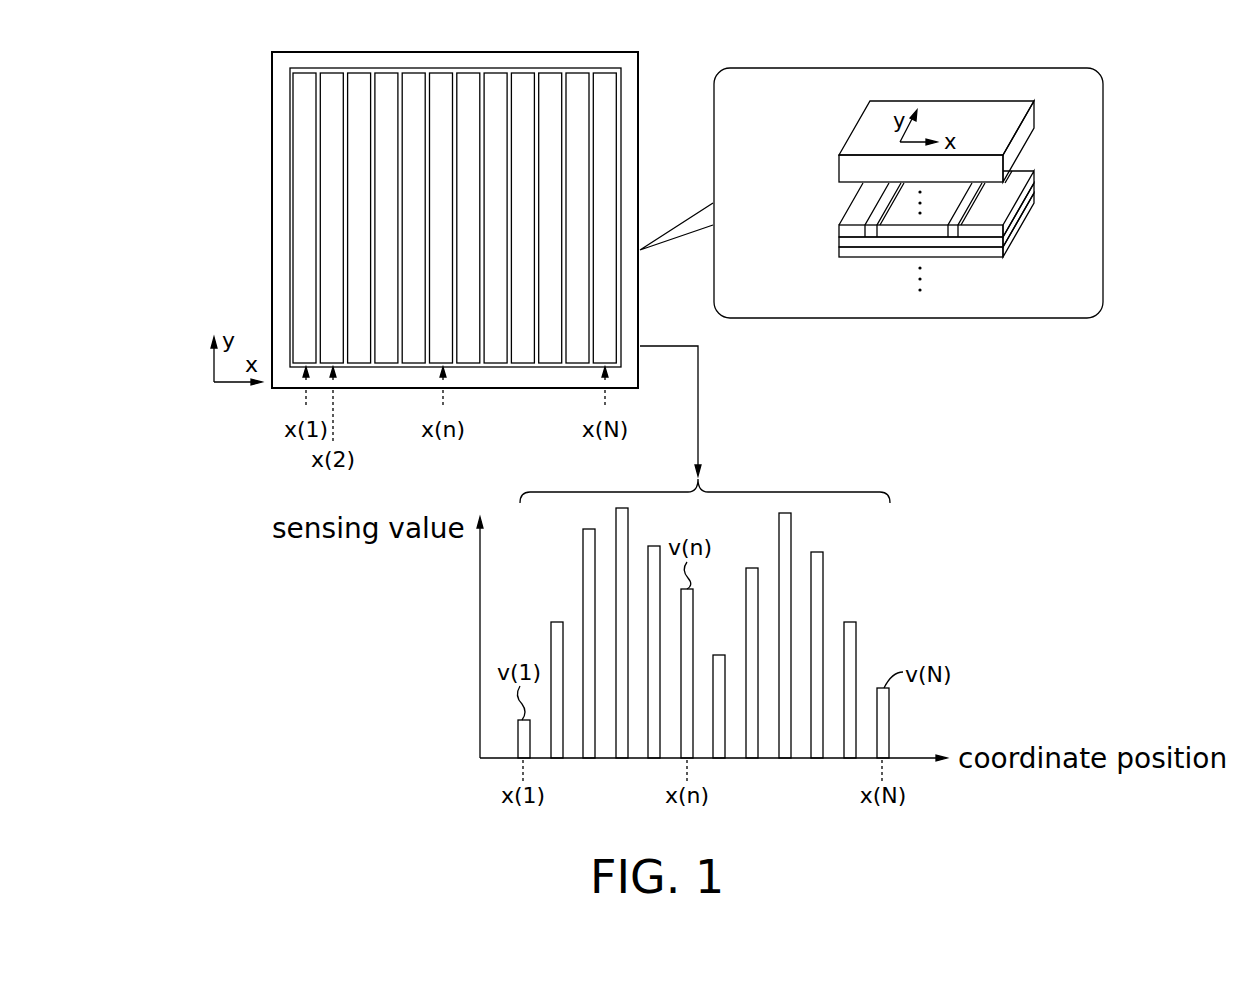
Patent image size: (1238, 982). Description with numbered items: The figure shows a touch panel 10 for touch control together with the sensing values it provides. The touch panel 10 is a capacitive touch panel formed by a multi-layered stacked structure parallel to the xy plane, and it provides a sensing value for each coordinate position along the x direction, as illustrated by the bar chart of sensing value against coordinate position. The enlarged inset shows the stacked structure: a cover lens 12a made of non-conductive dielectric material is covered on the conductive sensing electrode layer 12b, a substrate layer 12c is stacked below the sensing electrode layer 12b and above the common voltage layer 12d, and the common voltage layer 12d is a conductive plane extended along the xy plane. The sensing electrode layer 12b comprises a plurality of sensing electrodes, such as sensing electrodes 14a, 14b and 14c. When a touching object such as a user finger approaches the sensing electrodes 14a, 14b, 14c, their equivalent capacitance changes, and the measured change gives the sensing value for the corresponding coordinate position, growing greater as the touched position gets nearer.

The touch panel 10 is at (630, 94).
The cover lens 12a is at (832, 172).
The sensing electrode layer 12b is at (832, 231).
The substrate layer 12c is at (832, 243).
The common voltage layer 12d is at (832, 253).
The sensing electrode 14a is at (857, 214).
The sensing electrode 14b is at (957, 192).
The sensing electrode 14c is at (1012, 175).